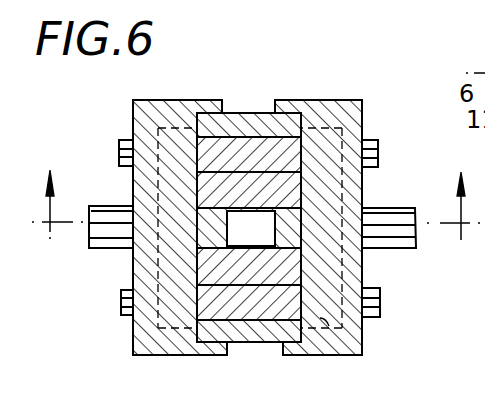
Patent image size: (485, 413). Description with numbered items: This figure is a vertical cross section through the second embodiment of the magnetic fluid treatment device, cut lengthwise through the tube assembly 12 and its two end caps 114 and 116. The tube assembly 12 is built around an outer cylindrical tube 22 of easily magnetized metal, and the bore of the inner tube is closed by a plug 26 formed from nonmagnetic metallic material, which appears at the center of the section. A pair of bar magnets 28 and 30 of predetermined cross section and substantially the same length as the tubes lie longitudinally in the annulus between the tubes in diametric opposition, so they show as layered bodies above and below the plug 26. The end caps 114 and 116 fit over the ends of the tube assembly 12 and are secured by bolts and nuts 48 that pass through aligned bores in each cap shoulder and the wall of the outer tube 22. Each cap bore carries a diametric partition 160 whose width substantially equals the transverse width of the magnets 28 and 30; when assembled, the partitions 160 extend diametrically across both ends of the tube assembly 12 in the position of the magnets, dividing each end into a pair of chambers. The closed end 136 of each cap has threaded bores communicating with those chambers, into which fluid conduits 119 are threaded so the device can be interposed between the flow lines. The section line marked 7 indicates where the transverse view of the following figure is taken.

The tube assembly 12 is at (326, 226).
The end cap 114 is at (182, 100).
The end cap 116 is at (313, 100).
The bar magnet 28 is at (283, 158).
The plug 26 is at (286, 212).
The bar magnet 30 is at (292, 266).
The outer cylindrical tube 22 is at (250, 343).
The partition 160 is at (176, 314).
The fluid conduit 119 is at (108, 250).
The bolts and nuts 48 is at (122, 298).
The closed end 136 is at (324, 320).
The section line 7- 7 is at (256, 214).